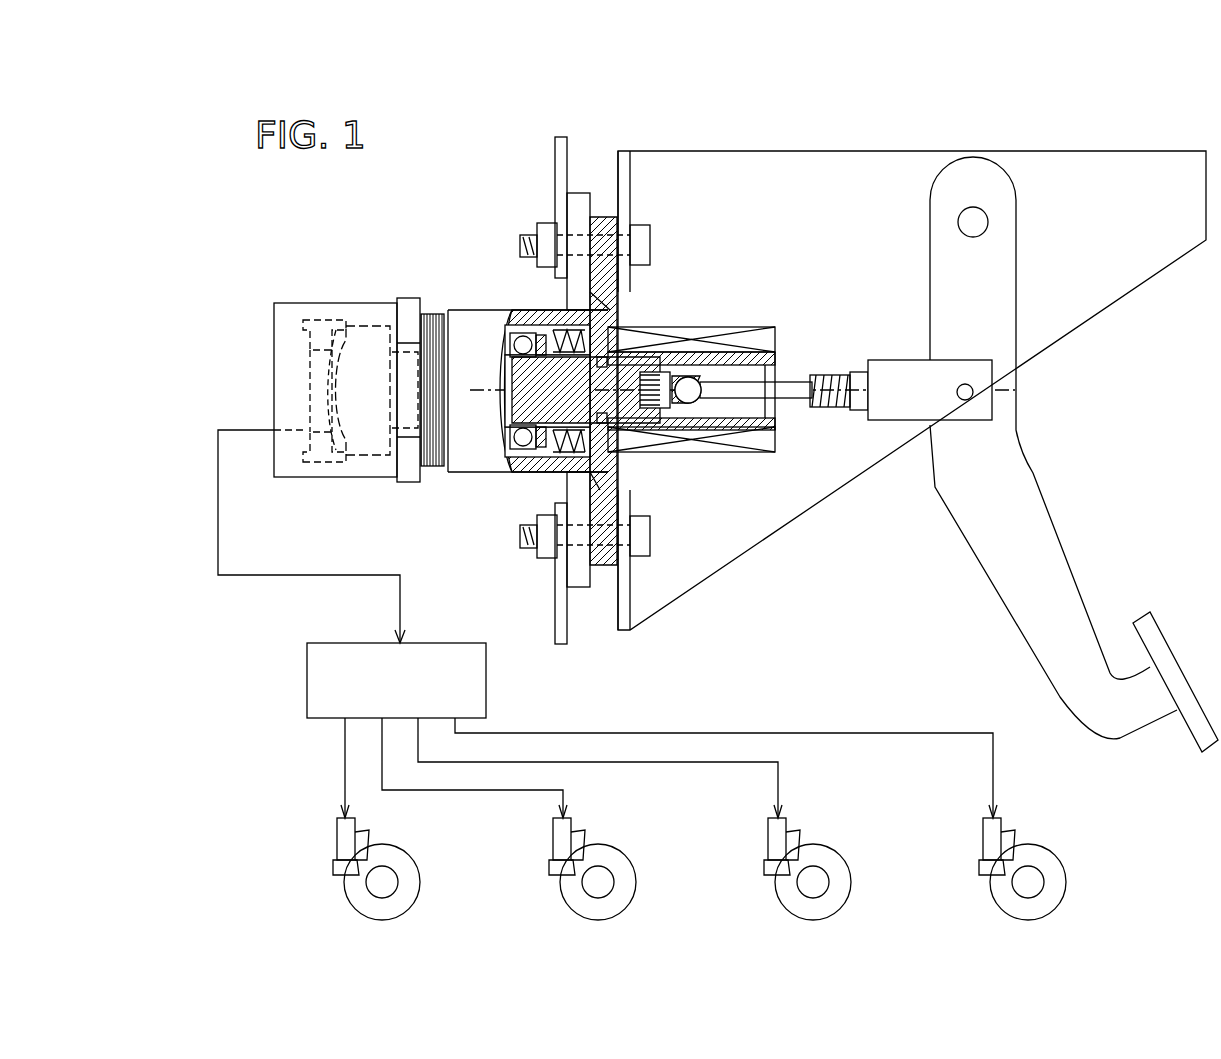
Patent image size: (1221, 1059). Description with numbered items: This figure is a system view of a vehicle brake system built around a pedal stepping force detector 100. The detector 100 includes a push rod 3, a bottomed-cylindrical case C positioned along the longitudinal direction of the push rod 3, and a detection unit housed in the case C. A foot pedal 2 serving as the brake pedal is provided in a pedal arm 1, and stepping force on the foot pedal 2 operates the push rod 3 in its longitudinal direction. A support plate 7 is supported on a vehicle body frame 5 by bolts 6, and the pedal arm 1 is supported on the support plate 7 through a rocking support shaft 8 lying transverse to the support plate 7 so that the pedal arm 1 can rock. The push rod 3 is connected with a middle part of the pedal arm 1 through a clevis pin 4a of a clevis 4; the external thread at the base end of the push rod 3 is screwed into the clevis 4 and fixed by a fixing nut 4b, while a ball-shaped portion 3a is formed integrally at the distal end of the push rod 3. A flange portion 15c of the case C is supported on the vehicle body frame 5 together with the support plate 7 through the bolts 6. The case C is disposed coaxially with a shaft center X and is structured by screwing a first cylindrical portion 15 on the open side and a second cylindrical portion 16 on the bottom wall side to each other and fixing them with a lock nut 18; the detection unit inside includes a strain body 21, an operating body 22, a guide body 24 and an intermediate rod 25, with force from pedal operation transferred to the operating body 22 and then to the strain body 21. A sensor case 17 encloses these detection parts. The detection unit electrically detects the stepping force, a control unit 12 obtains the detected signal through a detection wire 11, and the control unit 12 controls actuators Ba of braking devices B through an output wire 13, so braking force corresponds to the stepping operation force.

The pedal stepping force detector 100 is at (690, 129).
The pedal arm 1 is at (1040, 520).
The foot pedal 2 is at (1165, 635).
The push rod 3 is at (775, 415).
The ball-shaped portion 3a is at (700, 405).
The clevis 4 is at (915, 362).
The clevis pin 4a is at (968, 396).
The fixing nut 4b is at (852, 372).
The vehicle body frame 5 is at (555, 150).
The bolts 6 is at (650, 245).
The support plate 7 is at (1063, 160).
The rocking support shaft 8 is at (985, 222).
The detection wire 11 is at (255, 580).
The control unit 12 is at (352, 643).
The output wire 13 is at (345, 745).
The first cylindrical portion 15 is at (470, 308).
The flange portion 15c is at (620, 310).
The second cylindrical portion 16 is at (330, 478).
The sensor case 17 is at (275, 332).
The lock nut 18 is at (406, 482).
The strain body 21 is at (324, 318).
The operating body 22 is at (373, 468).
The guide body 24 is at (776, 345).
The intermediate rod 25 is at (502, 436).
The braking devices B is at (322, 905).
The actuators Ba is at (336, 826).
The bottomed-cylindrical case C is at (383, 298).
The shaft center X is at (461, 391).